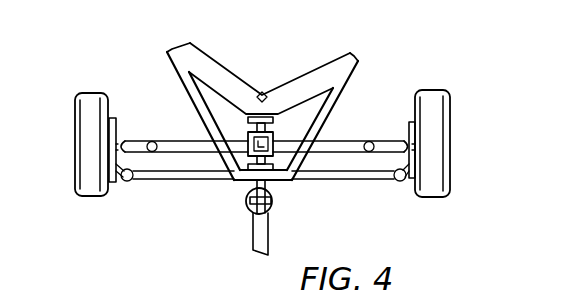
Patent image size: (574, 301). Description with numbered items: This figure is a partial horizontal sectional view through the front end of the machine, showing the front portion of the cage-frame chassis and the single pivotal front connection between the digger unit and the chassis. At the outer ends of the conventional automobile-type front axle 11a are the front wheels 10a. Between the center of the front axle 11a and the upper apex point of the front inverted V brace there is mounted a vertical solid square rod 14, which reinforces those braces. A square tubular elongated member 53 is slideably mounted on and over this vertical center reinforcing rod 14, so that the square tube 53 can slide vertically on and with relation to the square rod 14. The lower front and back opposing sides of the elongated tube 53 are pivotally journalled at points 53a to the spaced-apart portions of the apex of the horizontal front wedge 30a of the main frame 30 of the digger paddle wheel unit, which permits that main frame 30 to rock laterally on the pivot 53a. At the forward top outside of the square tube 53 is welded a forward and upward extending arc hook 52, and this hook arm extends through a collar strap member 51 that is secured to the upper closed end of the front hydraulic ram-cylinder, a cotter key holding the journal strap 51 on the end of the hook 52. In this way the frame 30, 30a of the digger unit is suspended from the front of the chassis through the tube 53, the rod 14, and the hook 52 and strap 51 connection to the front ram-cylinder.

The front wheels 10a is at (87, 187).
The front axle 11a is at (182, 119).
The vertical solid square rod 14 is at (252, 150).
The main frame 30 is at (275, 97).
The horizontal front wedge 30a is at (321, 128).
The collar strap member 51 is at (250, 210).
The arc hook 52 is at (276, 214).
The square tubular elongated member 53 is at (273, 134).
The pivot points 53a is at (261, 95).